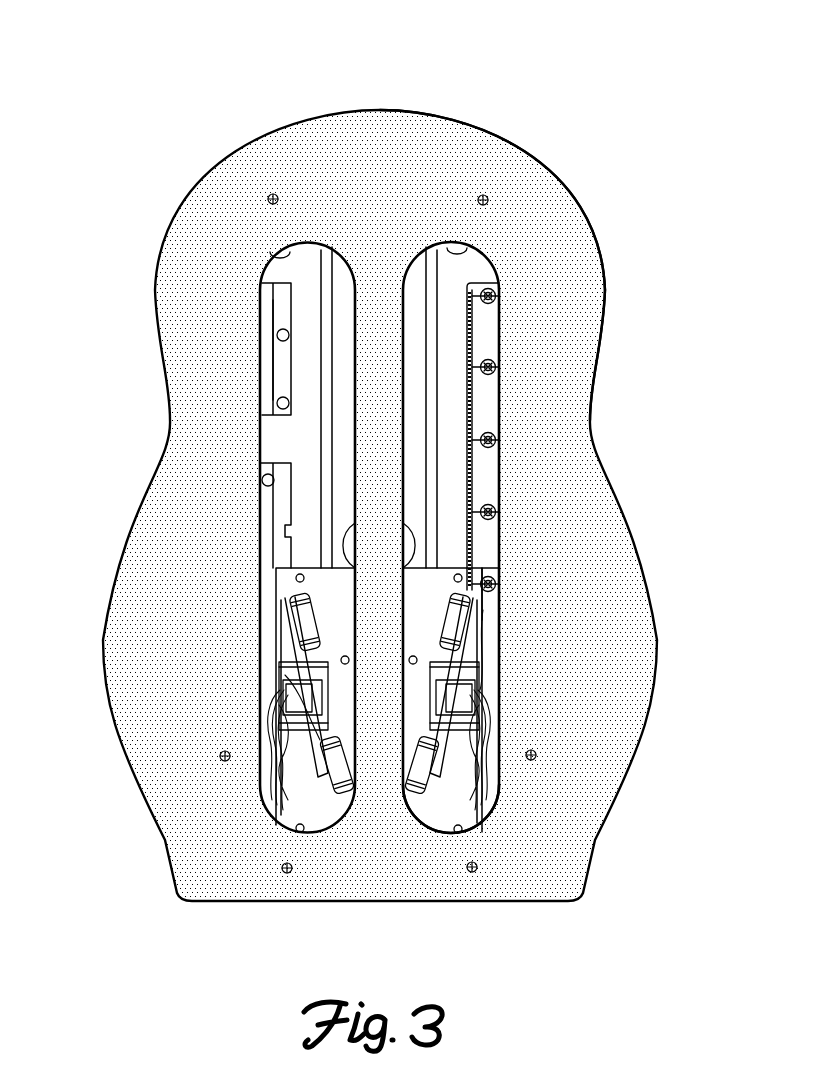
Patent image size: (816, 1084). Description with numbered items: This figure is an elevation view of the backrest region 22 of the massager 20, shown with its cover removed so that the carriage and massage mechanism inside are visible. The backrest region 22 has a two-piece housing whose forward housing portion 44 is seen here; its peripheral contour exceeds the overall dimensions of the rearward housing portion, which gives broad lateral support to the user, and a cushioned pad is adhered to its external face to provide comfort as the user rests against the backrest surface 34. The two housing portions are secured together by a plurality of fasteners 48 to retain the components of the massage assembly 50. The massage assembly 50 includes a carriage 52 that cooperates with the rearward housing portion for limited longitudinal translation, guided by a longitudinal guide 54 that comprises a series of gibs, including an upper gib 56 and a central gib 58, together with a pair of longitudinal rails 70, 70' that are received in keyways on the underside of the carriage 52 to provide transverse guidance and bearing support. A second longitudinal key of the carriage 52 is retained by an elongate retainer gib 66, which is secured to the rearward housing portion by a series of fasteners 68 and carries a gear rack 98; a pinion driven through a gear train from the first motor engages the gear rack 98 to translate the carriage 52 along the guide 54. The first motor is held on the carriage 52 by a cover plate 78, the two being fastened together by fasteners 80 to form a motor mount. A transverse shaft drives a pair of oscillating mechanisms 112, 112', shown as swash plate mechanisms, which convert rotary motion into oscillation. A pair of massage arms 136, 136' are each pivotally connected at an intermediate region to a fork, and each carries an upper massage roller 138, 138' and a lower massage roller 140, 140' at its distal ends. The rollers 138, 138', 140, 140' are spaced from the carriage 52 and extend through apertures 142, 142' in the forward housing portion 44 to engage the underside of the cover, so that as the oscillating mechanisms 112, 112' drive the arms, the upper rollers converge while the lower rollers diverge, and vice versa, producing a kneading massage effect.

The back support device 20 is at (374, 58).
The backrest region 22 is at (615, 98).
The backrest surface 34 is at (580, 307).
The forward housing portion 44 is at (600, 230).
The fasteners 48 is at (470, 872).
The massage assembly 50 is at (485, 600).
The carriage 52 is at (483, 573).
The longitudinal guide 54 is at (273, 368).
The upper gib 56 is at (282, 307).
The central gib 58 is at (283, 492).
The elongate retainer gib 66 is at (487, 405).
The fasteners 68 is at (487, 441).
The longitudinal rail 70 is at (287, 315).
The longitudinal rail 70' is at (477, 315).
The cover plate 78 is at (468, 790).
The fasteners 80 is at (458, 810).
The gear rack 98 is at (470, 493).
The oscillating mechanism 112 is at (188, 742).
The oscillating mechanism 112' is at (587, 721).
The massage arm 136 is at (178, 688).
The massage arm 136' is at (576, 716).
The upper massage roller 138 is at (186, 654).
The upper massage roller 138' is at (585, 684).
The lower massage roller 140 is at (225, 809).
The lower massage roller 140' is at (537, 811).
The aperture 142 is at (252, 478).
The aperture 142' is at (521, 481).